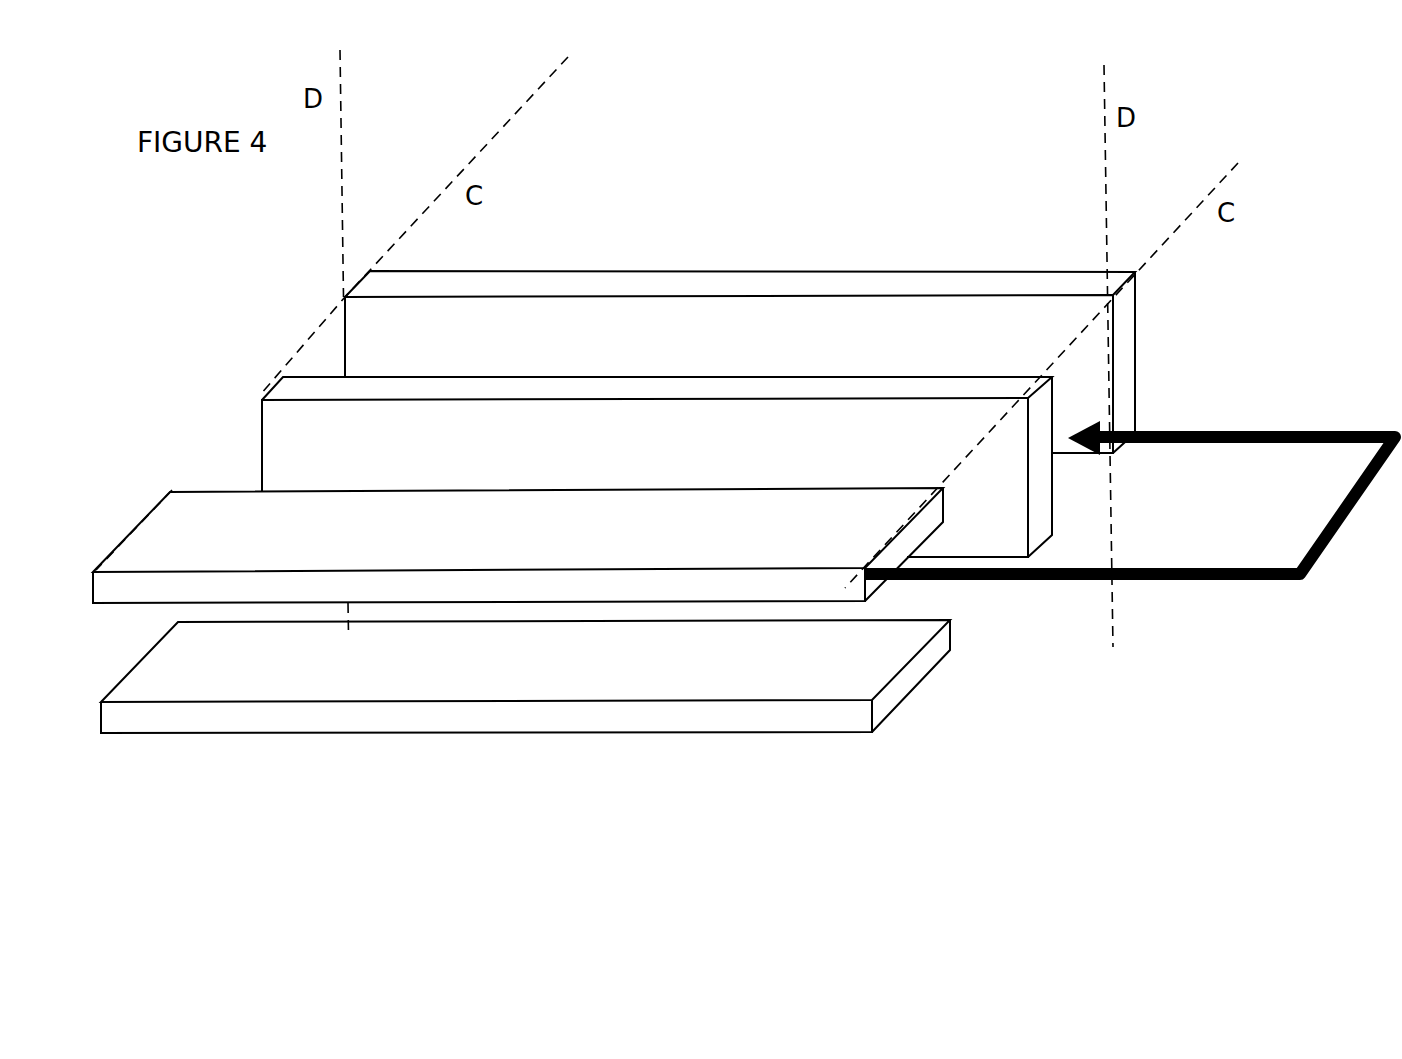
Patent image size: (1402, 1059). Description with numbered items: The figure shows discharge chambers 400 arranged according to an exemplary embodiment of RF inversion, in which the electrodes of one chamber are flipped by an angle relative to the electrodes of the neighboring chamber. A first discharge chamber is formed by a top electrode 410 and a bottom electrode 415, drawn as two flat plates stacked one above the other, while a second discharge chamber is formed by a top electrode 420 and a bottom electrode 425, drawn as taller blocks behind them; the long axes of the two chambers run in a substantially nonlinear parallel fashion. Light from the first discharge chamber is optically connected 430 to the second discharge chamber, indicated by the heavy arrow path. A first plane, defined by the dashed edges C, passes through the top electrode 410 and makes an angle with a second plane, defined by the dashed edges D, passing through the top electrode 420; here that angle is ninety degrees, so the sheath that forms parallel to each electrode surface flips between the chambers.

The discharge chambers 400 is at (190, 306).
The top electrode 410 is at (867, 580).
The bottom electrode 415 is at (872, 710).
The top electrode 420 is at (1043, 271).
The bottom electrode 425 is at (940, 378).
The optical connection 430 is at (1100, 582).